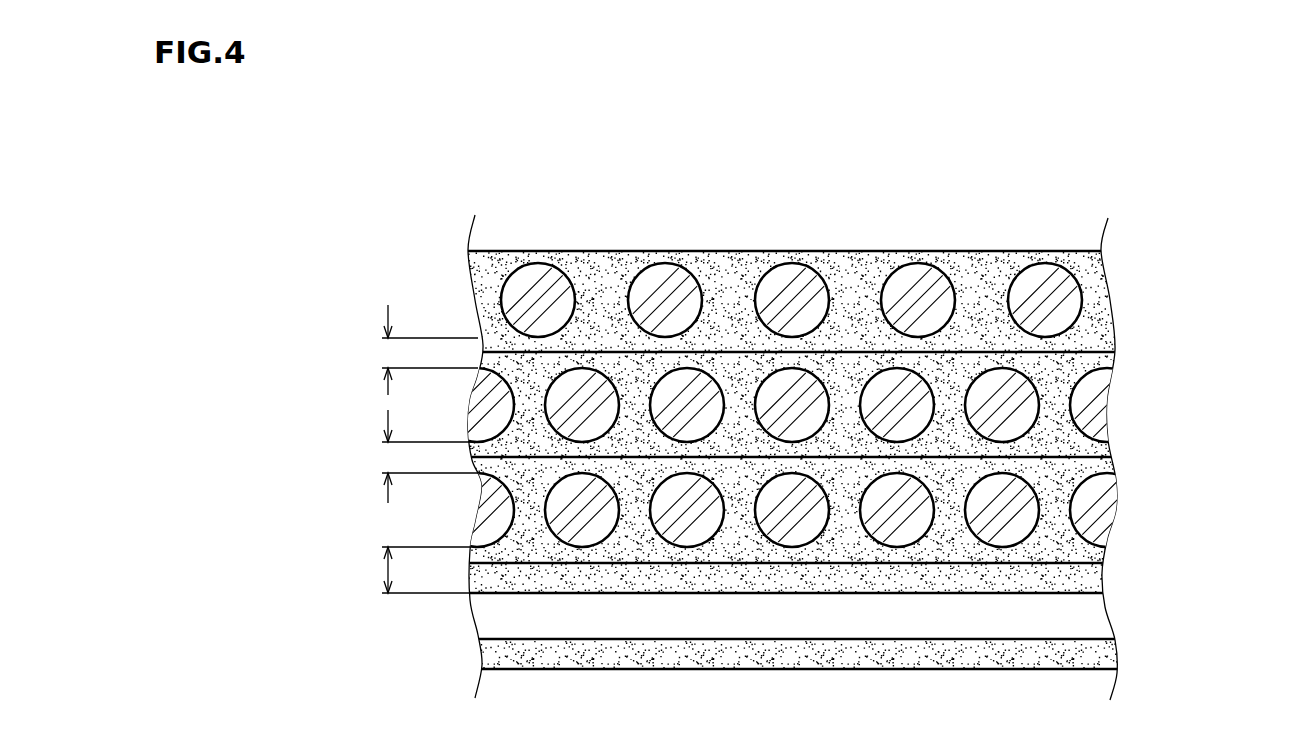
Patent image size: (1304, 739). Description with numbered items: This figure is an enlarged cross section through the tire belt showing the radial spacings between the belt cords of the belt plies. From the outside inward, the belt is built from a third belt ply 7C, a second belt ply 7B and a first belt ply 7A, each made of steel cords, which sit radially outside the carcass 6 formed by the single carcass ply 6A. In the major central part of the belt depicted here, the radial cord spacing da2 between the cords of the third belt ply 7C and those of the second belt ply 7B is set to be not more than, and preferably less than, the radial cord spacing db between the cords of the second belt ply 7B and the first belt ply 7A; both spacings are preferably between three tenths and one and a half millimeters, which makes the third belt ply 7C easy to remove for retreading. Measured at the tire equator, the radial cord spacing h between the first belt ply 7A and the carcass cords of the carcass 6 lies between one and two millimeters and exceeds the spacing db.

The third belt ply 7C is at (1080, 274).
The second belt ply 7B is at (1060, 372).
The first belt ply 7A is at (1060, 480).
The carcass ply 6A is at (1073, 618).
The carcass 6 is at (868, 616).
The radial cord spacing da2 is at (408, 350).
The radial cord spacing db is at (415, 456).
The radial cord spacing h is at (417, 570).